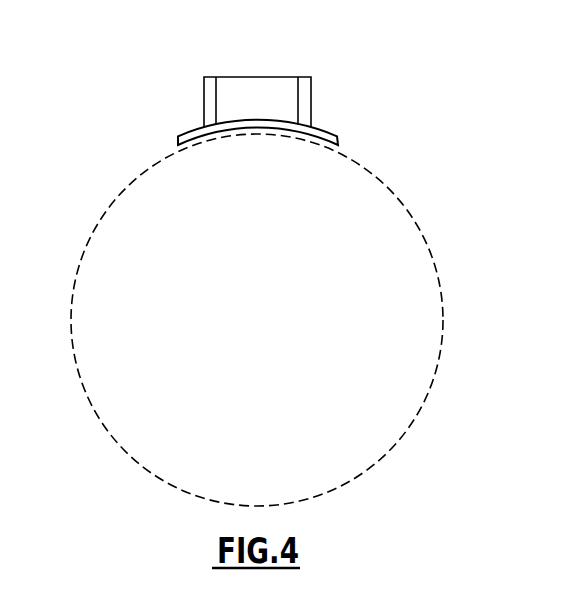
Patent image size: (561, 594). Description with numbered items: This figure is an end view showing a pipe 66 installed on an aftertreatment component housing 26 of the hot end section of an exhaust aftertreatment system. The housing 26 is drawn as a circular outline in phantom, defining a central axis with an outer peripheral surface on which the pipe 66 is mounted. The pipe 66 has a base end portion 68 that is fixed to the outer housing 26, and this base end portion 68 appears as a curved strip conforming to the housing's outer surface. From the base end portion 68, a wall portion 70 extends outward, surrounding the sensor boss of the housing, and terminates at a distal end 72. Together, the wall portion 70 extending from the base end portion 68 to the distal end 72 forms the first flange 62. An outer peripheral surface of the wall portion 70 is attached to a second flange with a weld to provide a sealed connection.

The aftertreatment component housing 26 is at (370, 170).
The first flange 62 is at (311, 97).
The pipe 66 is at (210, 112).
The base end portion 68 is at (326, 133).
The wall portion 70 is at (217, 100).
The distal end 72 is at (210, 77).